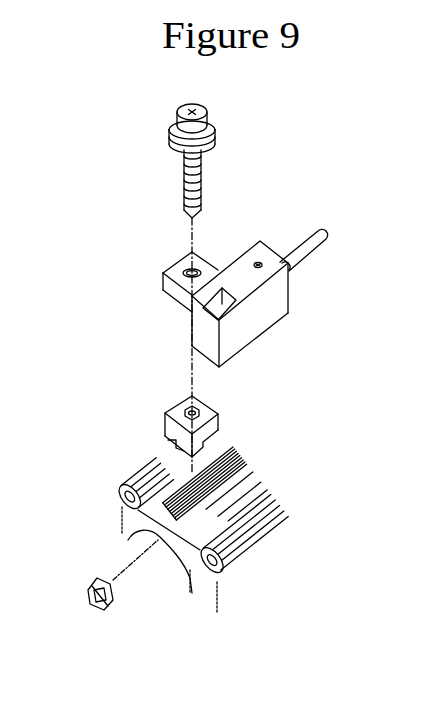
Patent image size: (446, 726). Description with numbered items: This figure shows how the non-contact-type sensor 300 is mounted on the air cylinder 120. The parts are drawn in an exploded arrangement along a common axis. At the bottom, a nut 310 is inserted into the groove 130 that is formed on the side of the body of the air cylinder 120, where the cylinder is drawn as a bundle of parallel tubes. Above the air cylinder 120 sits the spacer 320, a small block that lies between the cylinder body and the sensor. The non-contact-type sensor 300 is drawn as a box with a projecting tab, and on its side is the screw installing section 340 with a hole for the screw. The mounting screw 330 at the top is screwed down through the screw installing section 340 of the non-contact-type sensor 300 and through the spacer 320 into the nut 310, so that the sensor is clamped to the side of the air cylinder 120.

The mounting screw 330 is at (208, 112).
The screw installing section 340 is at (163, 287).
The non-contact-type sensor 300 is at (263, 322).
The spacer 320 is at (218, 420).
The air cylinder 120 is at (235, 577).
The groove 130 is at (153, 540).
The nut 310 is at (88, 606).